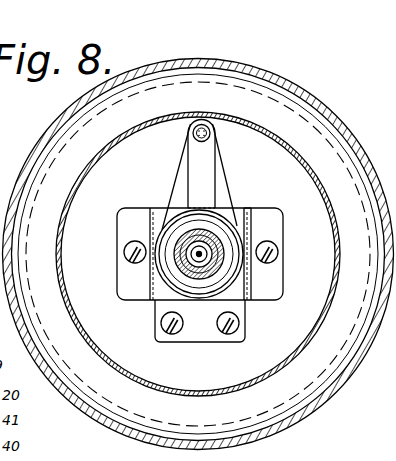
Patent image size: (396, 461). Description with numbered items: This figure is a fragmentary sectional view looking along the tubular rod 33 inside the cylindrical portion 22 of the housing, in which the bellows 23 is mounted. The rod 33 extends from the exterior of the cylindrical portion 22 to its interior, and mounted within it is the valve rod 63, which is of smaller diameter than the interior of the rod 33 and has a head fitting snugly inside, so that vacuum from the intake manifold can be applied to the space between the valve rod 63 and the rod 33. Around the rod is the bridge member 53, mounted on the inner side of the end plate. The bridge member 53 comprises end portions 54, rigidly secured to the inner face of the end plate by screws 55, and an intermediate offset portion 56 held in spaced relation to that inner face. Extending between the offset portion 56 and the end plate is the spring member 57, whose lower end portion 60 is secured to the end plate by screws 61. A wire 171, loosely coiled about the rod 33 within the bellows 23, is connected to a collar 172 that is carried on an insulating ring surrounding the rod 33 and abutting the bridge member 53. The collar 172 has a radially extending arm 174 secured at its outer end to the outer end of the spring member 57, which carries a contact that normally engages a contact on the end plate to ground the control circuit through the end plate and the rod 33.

The cylindrical portion 22 is at (320, 100).
The bellows 23 is at (313, 168).
The tubular rod 33 is at (187, 270).
The bridge member 53 is at (158, 200).
The end portions 54 is at (130, 214).
The screws 55 is at (126, 247).
The intermediate offset portion 56 is at (247, 211).
The spring member 57 is at (178, 177).
The lower end portion 60 is at (203, 332).
The screws 61 is at (172, 326).
The valve rod 63 is at (190, 253).
The wire 171 is at (228, 276).
The collar 172 is at (235, 264).
The radially extending arm 174 is at (205, 171).